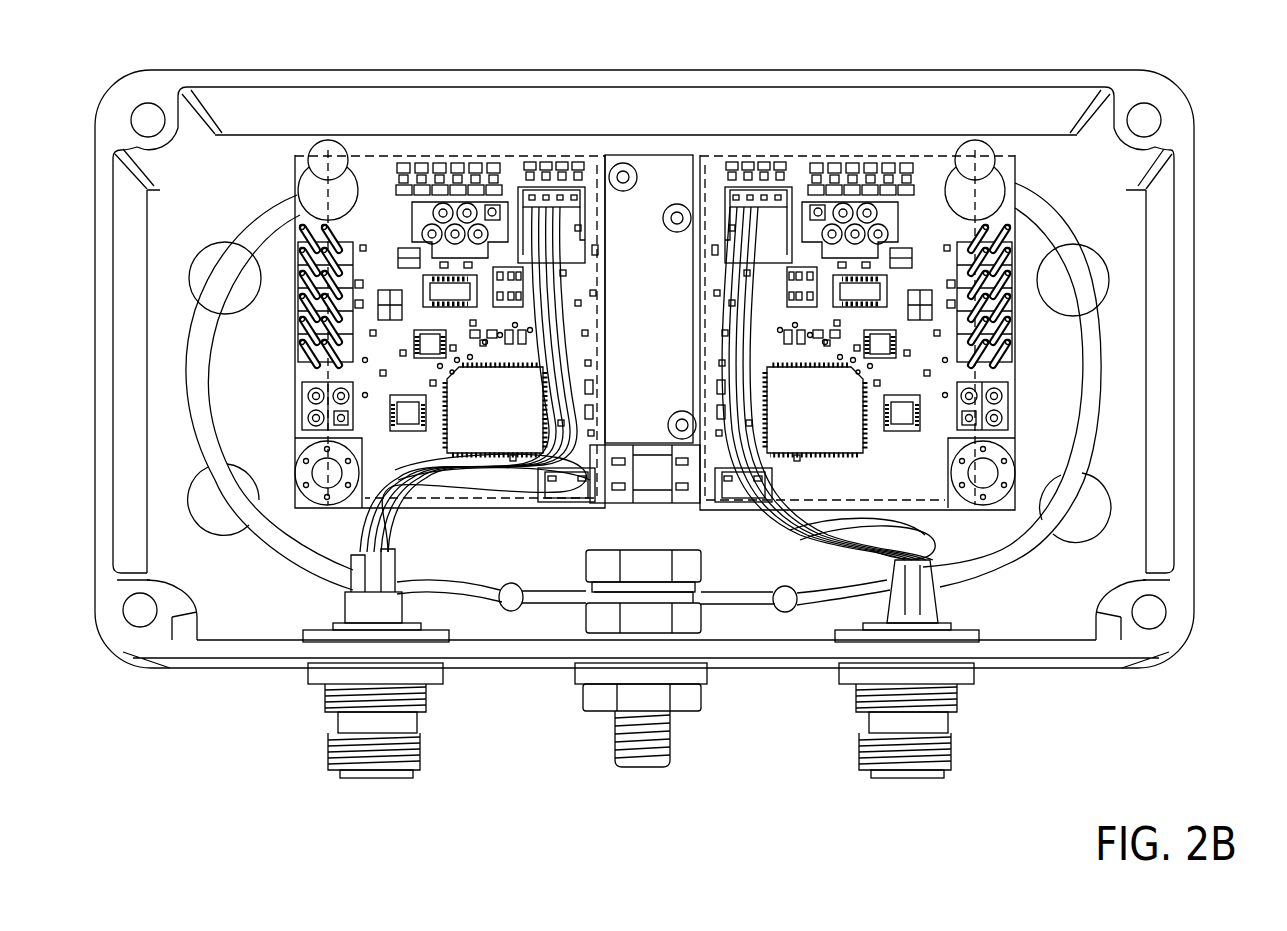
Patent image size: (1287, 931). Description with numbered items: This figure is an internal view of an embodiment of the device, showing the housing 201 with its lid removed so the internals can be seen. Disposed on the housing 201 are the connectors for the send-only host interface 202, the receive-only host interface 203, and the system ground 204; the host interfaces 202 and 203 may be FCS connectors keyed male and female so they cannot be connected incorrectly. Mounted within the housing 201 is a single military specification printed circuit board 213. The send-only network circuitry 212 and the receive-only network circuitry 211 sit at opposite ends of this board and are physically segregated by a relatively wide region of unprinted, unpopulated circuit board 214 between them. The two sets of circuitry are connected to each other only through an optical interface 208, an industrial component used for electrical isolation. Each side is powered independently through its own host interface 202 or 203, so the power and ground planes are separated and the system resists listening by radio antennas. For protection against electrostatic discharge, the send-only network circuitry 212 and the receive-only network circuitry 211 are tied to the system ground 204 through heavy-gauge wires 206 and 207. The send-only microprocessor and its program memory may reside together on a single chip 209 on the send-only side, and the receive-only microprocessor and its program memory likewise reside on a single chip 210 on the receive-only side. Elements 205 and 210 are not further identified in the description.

The housing 201 is at (1176, 103).
The send-only host interface 202 is at (930, 780).
The receive-only host interface 203 is at (405, 780).
The system ground 204 is at (660, 768).
The nut 205 is at (640, 577).
The wire 206 is at (200, 420).
The wire 207 is at (1084, 388).
The optical interface 208 is at (655, 487).
The single chip 209 is at (490, 425).
The processor chip 210 is at (836, 437).
The receive-only network circuitry 211 is at (298, 352).
The send-only network circuitry 212 is at (977, 150).
The printed circuit board 213 is at (297, 197).
The unprinted, unpopulated circuit board region 214 is at (652, 187).